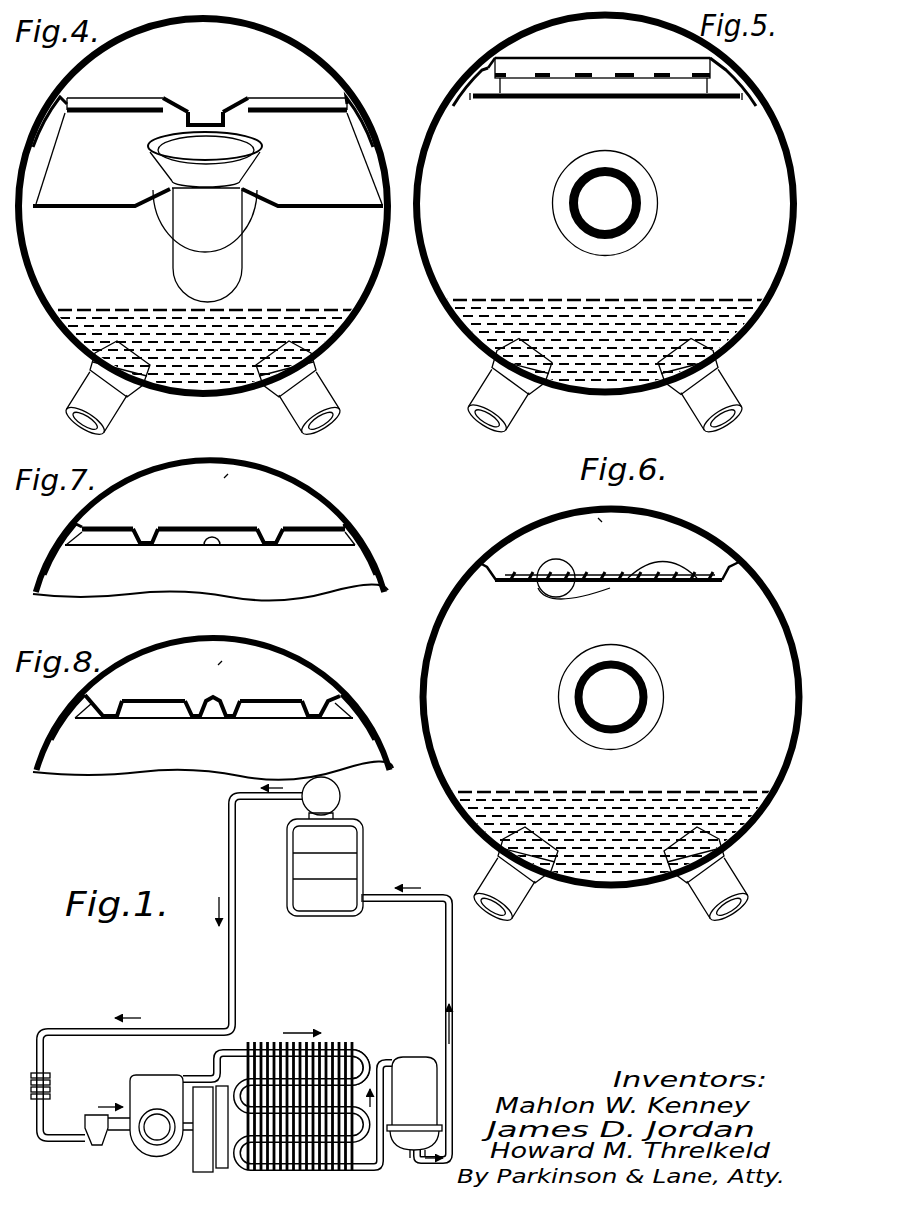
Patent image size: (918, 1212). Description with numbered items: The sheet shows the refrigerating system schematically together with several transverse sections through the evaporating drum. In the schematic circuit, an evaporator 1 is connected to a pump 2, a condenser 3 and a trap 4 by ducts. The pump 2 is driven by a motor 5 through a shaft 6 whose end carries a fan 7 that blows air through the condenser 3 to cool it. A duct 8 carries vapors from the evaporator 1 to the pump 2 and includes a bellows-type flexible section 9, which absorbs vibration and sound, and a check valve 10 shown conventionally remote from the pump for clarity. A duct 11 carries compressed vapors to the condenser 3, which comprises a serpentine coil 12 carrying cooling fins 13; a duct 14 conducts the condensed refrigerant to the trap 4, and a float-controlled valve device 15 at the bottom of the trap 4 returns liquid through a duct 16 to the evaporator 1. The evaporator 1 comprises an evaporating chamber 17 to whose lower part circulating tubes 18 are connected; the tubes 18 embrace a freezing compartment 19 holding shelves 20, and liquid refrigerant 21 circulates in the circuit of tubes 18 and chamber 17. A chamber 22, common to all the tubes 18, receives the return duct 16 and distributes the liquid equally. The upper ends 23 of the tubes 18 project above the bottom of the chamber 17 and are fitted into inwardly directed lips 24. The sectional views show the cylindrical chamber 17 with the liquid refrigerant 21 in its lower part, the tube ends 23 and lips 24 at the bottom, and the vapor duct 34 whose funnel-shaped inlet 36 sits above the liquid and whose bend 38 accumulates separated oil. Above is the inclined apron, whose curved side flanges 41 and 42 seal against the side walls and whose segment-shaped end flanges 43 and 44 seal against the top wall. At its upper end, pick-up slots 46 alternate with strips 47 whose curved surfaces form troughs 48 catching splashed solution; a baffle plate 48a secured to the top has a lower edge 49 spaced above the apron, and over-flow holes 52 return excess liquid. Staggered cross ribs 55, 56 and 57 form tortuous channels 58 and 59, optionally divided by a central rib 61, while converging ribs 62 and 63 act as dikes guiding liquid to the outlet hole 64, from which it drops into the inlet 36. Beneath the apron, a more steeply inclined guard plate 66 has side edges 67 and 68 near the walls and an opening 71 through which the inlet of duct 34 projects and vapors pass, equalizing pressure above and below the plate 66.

In FIG. 1, the evaporator 1 is at (322, 854).
In FIG. 1, the pump 2 is at (158, 1075).
In FIG. 1, the condenser 3 is at (357, 1047).
In FIG. 1, the trap 4 is at (414, 1103).
In FIG. 1, the motor 5 is at (201, 1162).
In FIG. 1, the shaft 6 is at (192, 1122).
In FIG. 1, the fan 7 is at (222, 1168).
In FIG. 1, the duct 8 is at (238, 930).
In FIG. 1, the flexible section 9 is at (50, 1092).
In FIG. 1, the check valve 10 is at (93, 1119).
In FIG. 1, the duct 11 is at (216, 1070).
In FIG. 1, the serpentine coil 12 is at (361, 1055).
In FIG. 1, the cooling fins 13 is at (331, 1038).
In FIG. 1, the duct 14 is at (383, 1112).
In FIG. 1, the valve device 15 is at (412, 1165).
In FIG. 1, the duct 16 is at (453, 965).
In FIG. 4, the evaporating chamber 17 is at (332, 66).
In FIG. 5, the evaporating chamber 17 is at (458, 74).
In FIG. 6, the evaporating chamber 17 is at (482, 560).
In FIG. 7, the evaporating chamber 17 is at (346, 508).
In FIG. 8, the evaporating chamber 17 is at (334, 679).
In FIG. 1, the evaporating chamber 17 is at (334, 791).
In FIG. 4, the circulating tubes 18 is at (300, 395).
In FIG. 5, the circulating tubes 18 is at (702, 393).
In FIG. 6, the circulating tubes 18 is at (512, 880).
In FIG. 1, the circulating tubes 18 is at (289, 866).
In FIG. 1, the freezing compartment 19 is at (293, 897).
In FIG. 1, the shelves 20 is at (337, 854).
In FIG. 4, the liquid refrigerant 21 is at (302, 310).
In FIG. 5, the liquid refrigerant 21 is at (612, 306).
In FIG. 6, the liquid refrigerant 21 is at (607, 796).
In FIG. 1, the chamber 22 is at (368, 896).
In FIG. 4, the upper ends of tubes 23 is at (292, 340).
In FIG. 5, the upper ends of tubes 23 is at (694, 338).
In FIG. 6, the upper ends of tubes 23 is at (527, 828).
In FIG. 4, the lips or flanges 24 is at (300, 356).
In FIG. 5, the lips or flanges 24 is at (702, 354).
In FIG. 6, the lips or flanges 24 is at (708, 840).
In FIG. 5, the vapor duct 34 is at (638, 209).
In FIG. 6, the vapor duct 34 is at (648, 690).
In FIG. 4, the vapor inlet 36 is at (245, 150).
In FIG. 4, the bend 38 is at (224, 279).
In FIG. 4, the curved side flange 41 is at (58, 118).
In FIG. 5, the curved side flange 41 is at (461, 106).
In FIG. 6, the curved side flange 41 is at (477, 586).
In FIG. 7, the curved side flange 41 is at (52, 560).
In FIG. 8, the curved side flange 41 is at (60, 738).
In FIG. 4, the curved side flange 42 is at (350, 135).
In FIG. 5, the curved side flange 42 is at (747, 106).
In FIG. 6, the curved side flange 42 is at (738, 580).
In FIG. 7, the curved side flange 42 is at (364, 560).
In FIG. 8, the curved side flange 42 is at (370, 733).
In FIG. 7, the end flange 43 is at (226, 476).
In FIG. 8, the end flange 43 is at (220, 663).
In FIG. 6, the end flange 44 is at (600, 520).
In FIG. 6, the slots 46 is at (660, 575).
In FIG. 6, the strips or bars 47 is at (612, 586).
In FIG. 6, the troughs 48 is at (608, 567).
In FIG. 5, the baffle plate 48a is at (602, 54).
In FIG. 5, the lower edge of baffle plate 49 is at (497, 57).
In FIG. 5, the over-flow holes 52 is at (680, 70).
In FIG. 8, the cross rib 55 is at (212, 685).
In FIG. 7, the cross rib 56 is at (203, 531).
In FIG. 7, the cross rib 57 is at (118, 527).
In FIG. 7, the channel 58 is at (146, 538).
In FIG. 8, the channel 59 is at (106, 707).
In FIG. 8, the rib 61 is at (222, 704).
In FIG. 4, the rib 62 is at (250, 100).
In FIG. 4, the rib 63 is at (170, 100).
In FIG. 4, the hole or outlet 64 is at (205, 118).
In FIG. 4, the guard plate 66 is at (72, 205).
In FIG. 5, the guard plate 66 is at (546, 100).
In FIG. 4, the side edge 67 is at (50, 158).
In FIG. 5, the side edge 67 is at (471, 103).
In FIG. 4, the side edge 68 is at (370, 169).
In FIG. 5, the side edge 68 is at (737, 100).
In FIG. 4, the opening 71 is at (150, 200).